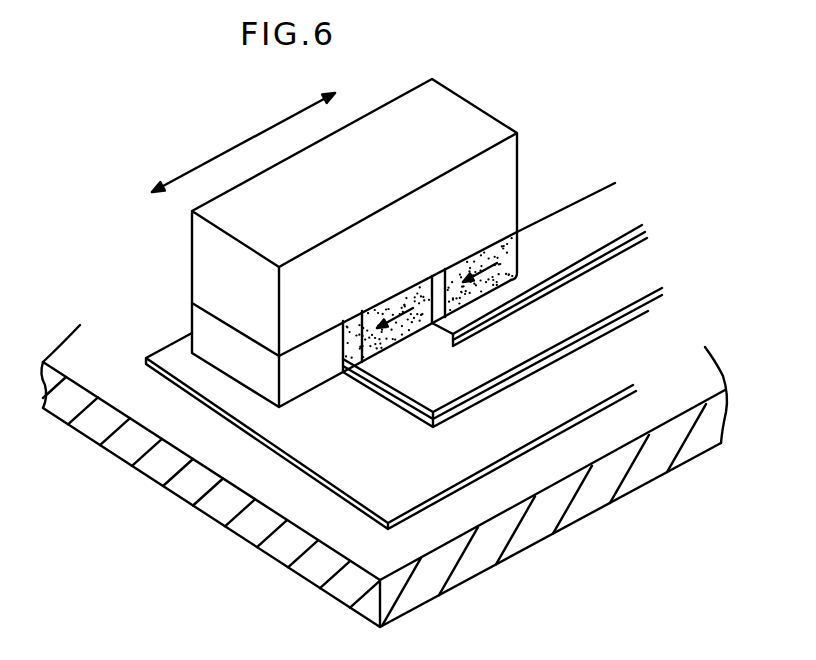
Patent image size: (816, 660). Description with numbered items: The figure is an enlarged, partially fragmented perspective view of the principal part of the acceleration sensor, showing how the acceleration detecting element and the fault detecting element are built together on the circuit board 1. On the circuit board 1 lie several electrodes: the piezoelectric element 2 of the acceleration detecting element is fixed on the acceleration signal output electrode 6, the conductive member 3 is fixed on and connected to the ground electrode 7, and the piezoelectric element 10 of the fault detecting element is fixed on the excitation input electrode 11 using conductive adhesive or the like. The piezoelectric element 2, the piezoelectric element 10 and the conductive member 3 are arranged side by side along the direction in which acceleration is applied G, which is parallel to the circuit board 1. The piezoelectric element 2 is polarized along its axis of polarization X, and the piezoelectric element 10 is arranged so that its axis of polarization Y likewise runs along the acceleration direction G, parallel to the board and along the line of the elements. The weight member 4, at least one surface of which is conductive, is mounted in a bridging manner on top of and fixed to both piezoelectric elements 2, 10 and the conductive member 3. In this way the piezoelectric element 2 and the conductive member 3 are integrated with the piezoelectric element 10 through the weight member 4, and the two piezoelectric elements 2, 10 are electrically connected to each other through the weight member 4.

The circuit board 1 is at (98, 425).
The piezoelectric element 2 is at (495, 250).
The conductive member 3 is at (200, 327).
The weight member 4 is at (458, 123).
The acceleration signal output electrode 6 is at (595, 230).
The ground electrode 7 is at (313, 455).
The piezoelectric element 10 is at (378, 347).
The excitation input electrode 11 is at (527, 340).
The direction in which acceleration is applied G is at (230, 147).
The axis of polarization X is at (482, 265).
The axis of polarization Y is at (402, 316).